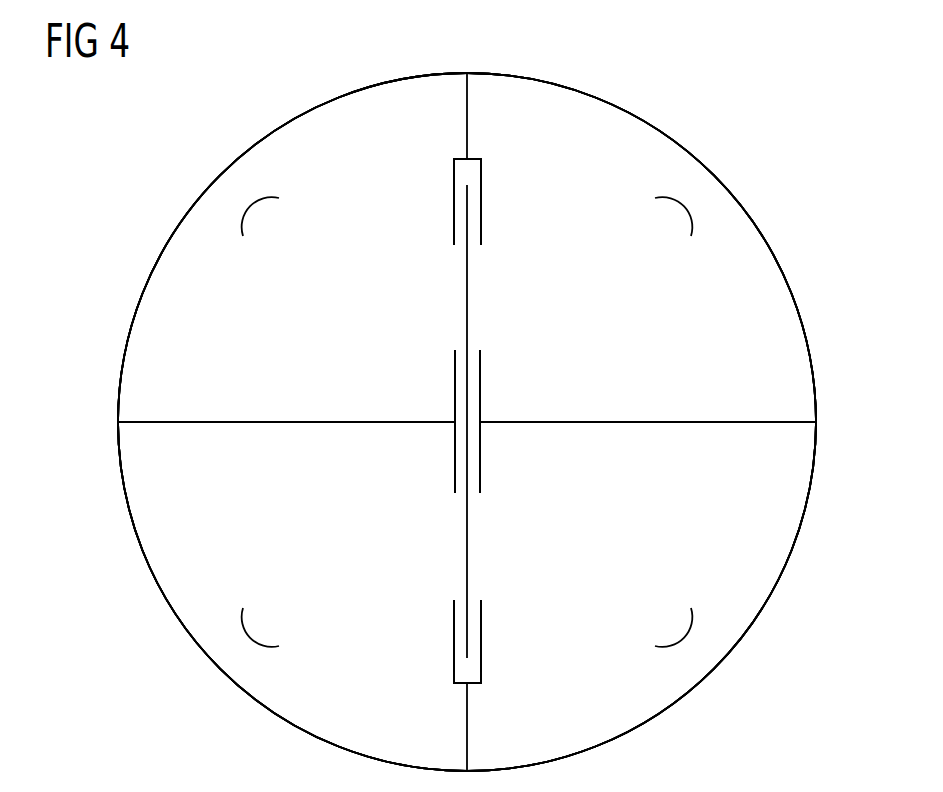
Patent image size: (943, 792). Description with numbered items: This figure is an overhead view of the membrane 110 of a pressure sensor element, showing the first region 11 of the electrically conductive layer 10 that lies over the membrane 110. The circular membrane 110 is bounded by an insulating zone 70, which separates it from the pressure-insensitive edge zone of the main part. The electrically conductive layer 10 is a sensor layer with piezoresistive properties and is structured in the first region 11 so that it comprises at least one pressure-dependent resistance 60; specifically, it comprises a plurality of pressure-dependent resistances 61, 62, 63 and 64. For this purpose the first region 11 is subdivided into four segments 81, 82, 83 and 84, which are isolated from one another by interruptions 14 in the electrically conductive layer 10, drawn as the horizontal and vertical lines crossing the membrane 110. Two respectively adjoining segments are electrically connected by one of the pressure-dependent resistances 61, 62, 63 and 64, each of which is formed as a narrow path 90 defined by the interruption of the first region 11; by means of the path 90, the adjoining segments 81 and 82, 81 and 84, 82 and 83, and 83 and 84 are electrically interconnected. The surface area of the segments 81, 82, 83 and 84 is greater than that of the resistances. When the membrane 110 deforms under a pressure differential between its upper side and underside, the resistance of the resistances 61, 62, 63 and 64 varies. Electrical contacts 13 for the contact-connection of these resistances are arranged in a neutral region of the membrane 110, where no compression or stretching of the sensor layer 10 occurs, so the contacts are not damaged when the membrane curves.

The electrically conductive layer 10 is at (143, 332).
The first region 11 is at (467, 422).
The electrical contacts 13 is at (250, 210).
The interruptions 14 is at (471, 100).
The pressure-dependent resistance 60 is at (467, 421).
The pressure-dependent resistance 61 is at (418, 452).
The pressure-dependent resistance 62 is at (530, 454).
The pressure-dependent resistance 63 is at (507, 205).
The pressure-dependent resistance 64 is at (508, 675).
The insulating zone 70 is at (648, 127).
The segment 81 is at (325, 118).
The segment 82 is at (167, 572).
The segment 83 is at (767, 572).
The segment 84 is at (770, 259).
The path 90 is at (461, 170).
The membrane 110 is at (200, 275).